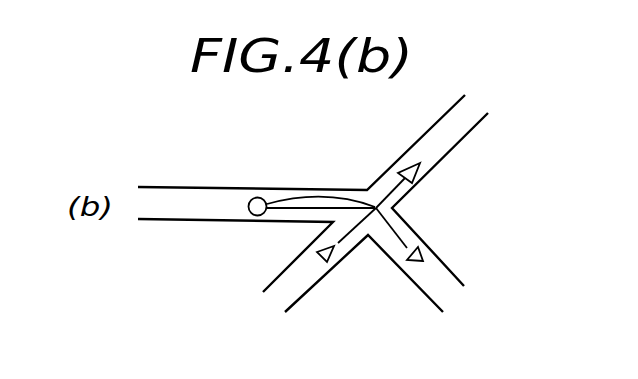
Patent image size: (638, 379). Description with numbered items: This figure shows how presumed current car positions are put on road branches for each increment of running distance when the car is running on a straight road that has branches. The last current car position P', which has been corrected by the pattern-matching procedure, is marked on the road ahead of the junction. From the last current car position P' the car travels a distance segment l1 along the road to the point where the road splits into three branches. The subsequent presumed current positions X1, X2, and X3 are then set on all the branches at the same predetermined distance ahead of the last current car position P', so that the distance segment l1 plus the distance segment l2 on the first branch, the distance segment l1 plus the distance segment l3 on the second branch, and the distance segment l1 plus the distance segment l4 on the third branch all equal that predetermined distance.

The last current car position P' is at (243, 237).
The distance segment along the road l1 is at (318, 197).
The distance segment along the first branch l2 is at (382, 190).
The distance segment along the second branch l3 is at (398, 225).
The distance segment along the third branch l4 is at (356, 237).
The presumed current position X1 is at (413, 164).
The presumed current position X2 is at (426, 258).
The presumed current position X3 is at (327, 260).